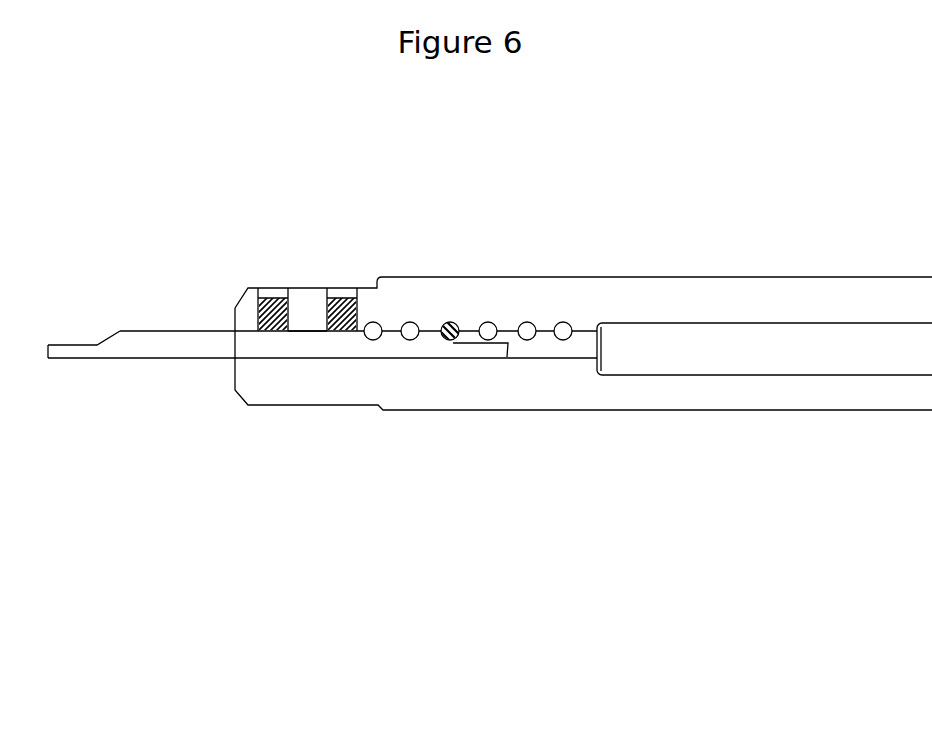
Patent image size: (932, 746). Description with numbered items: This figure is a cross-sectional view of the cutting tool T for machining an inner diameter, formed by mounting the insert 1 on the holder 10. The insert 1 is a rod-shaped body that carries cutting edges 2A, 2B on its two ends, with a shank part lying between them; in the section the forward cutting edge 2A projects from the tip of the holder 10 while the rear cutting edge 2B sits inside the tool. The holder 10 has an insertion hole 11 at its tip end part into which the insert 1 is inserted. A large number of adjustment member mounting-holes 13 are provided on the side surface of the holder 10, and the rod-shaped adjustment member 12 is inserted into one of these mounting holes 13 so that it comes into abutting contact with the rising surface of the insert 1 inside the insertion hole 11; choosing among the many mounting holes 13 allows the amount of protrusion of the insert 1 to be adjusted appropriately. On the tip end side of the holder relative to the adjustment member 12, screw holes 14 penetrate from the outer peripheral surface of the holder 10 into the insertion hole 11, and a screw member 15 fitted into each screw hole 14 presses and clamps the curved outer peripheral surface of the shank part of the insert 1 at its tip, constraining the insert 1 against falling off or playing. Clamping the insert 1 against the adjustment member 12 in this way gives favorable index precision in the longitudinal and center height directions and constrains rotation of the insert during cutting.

The cutting edge 2A is at (48, 345).
The insert 1 is at (167, 331).
The insertion hole 11 is at (547, 345).
The holder 10 is at (737, 277).
The screw holes 14 is at (338, 293).
The screw member 15 is at (275, 358).
The adjustment member mounting-holes 13 is at (590, 320).
The adjustment member 12 is at (451, 340).
The cutting edge 2B is at (507, 340).
The cutting tool T is at (864, 243).